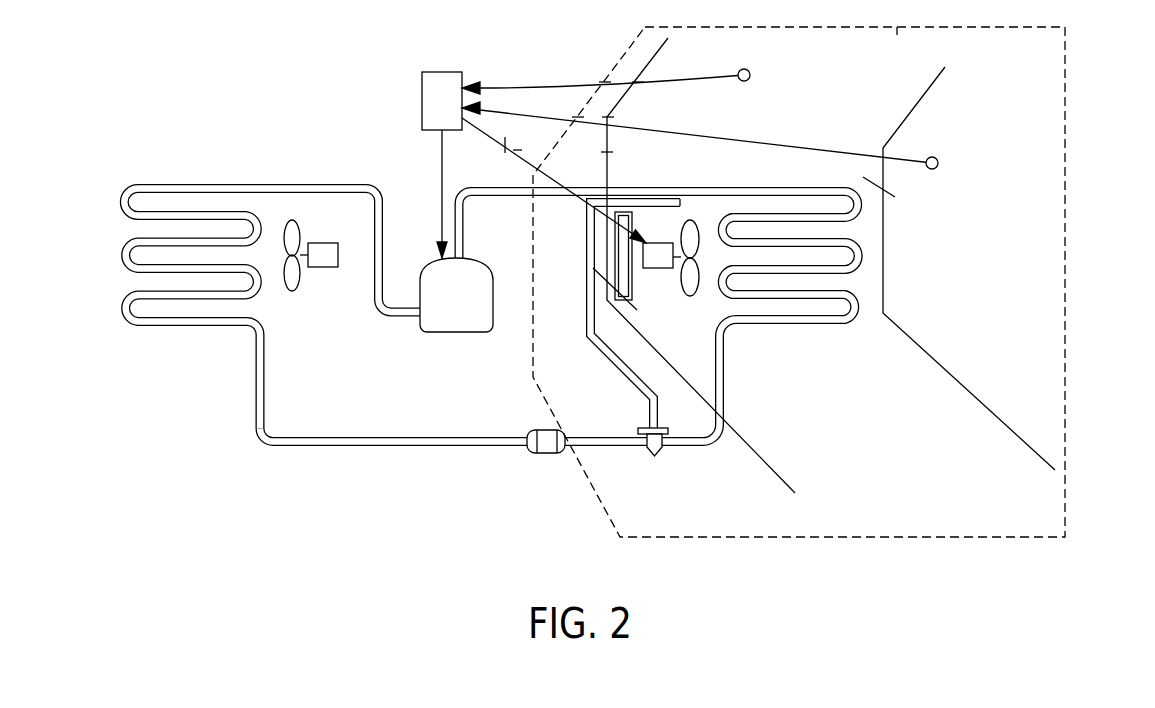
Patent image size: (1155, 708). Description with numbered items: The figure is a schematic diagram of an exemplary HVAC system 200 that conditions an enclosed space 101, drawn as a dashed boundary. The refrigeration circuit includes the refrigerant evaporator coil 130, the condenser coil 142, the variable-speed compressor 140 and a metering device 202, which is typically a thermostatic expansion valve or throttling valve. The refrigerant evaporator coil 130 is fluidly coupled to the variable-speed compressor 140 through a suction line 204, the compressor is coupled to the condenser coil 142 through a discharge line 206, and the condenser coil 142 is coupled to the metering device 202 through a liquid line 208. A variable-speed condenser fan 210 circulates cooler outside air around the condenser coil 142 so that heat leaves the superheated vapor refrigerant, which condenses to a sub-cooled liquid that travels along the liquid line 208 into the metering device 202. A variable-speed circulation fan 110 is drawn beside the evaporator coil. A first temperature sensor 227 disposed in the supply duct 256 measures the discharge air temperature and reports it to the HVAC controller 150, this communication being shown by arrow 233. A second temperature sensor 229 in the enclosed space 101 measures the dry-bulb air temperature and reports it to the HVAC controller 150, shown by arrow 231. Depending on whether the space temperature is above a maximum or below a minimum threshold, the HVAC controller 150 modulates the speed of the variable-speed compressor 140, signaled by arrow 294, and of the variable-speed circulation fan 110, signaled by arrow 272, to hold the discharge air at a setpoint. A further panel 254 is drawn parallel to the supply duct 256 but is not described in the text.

The enclosed space 101 is at (1068, 288).
The variable-speed circulation fan 110 is at (661, 243).
The refrigerant evaporator coil 130 is at (835, 325).
The variable-speed compressor 140 is at (453, 333).
The condenser coil 142 is at (180, 328).
The HVAC controller 150 is at (420, 75).
The HVAC system 200 is at (189, 122).
The metering device 202 is at (652, 458).
The suction line 204 is at (488, 199).
The discharge line 206 is at (382, 192).
The liquid line 208 is at (382, 448).
The variable-speed condenser fan 210 is at (327, 268).
The first temperature sensor 227 is at (750, 73).
The second temperature sensor 229 is at (940, 166).
The arrow 231 is at (824, 150).
The arrow 233 is at (543, 85).
The panel 254 is at (768, 470).
The supply duct 256 is at (918, 110).
The arrow 272 is at (636, 234).
The arrow 294 is at (441, 223).